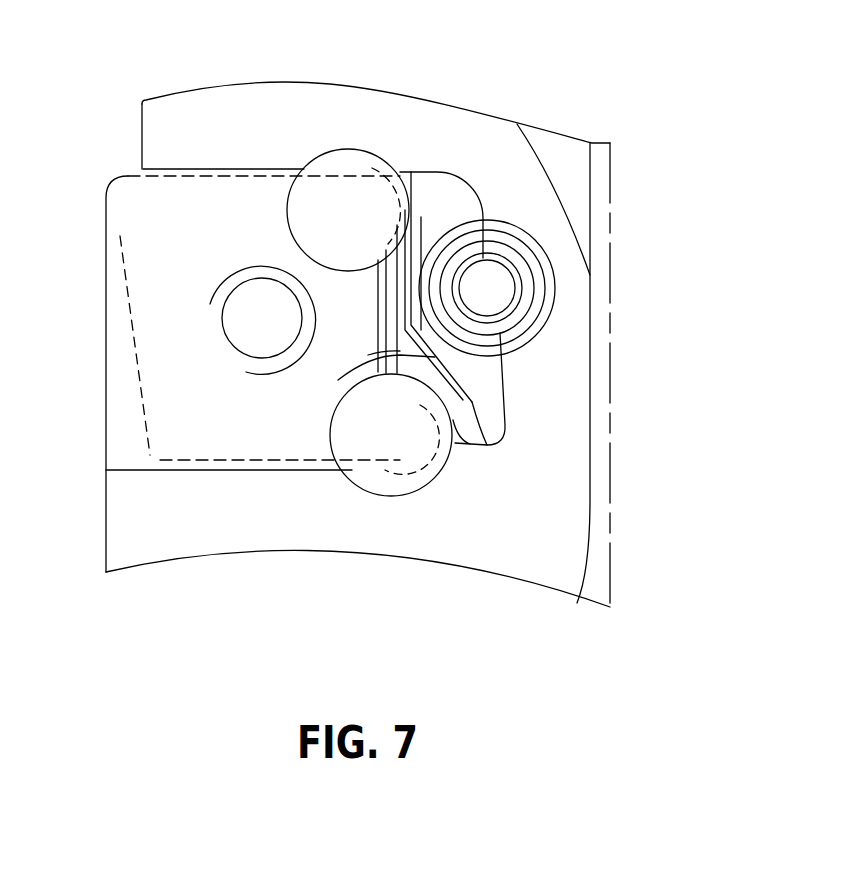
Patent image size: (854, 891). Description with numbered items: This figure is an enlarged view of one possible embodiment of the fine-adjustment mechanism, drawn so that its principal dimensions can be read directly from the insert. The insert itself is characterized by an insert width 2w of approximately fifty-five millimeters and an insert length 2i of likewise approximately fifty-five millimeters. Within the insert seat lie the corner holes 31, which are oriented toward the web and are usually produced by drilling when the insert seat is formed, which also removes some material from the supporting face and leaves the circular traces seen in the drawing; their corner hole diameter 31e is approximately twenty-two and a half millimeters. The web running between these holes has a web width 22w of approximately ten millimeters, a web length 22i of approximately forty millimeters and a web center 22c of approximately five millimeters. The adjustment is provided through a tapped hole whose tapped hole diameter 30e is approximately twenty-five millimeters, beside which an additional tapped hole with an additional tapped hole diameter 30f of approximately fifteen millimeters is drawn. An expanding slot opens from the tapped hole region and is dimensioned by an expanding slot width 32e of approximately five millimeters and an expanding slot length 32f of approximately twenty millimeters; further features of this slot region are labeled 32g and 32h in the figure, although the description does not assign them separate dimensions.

The insert length 2i is at (112, 360).
The insert width 2w is at (238, 165).
The corner hole diameter 31e is at (327, 150).
The additional tapped hole diameter 30f is at (255, 308).
The web width 22w is at (422, 211).
The web length 22i is at (413, 247).
The web center 22c is at (462, 405).
The tapped hole diameter 30e is at (560, 308).
The expanding slot width 32e is at (479, 345).
The expanding slot length 32f is at (478, 419).
The tab corner 32h is at (503, 437).
The rib 32g is at (346, 378).
The corner holes 31 is at (420, 497).